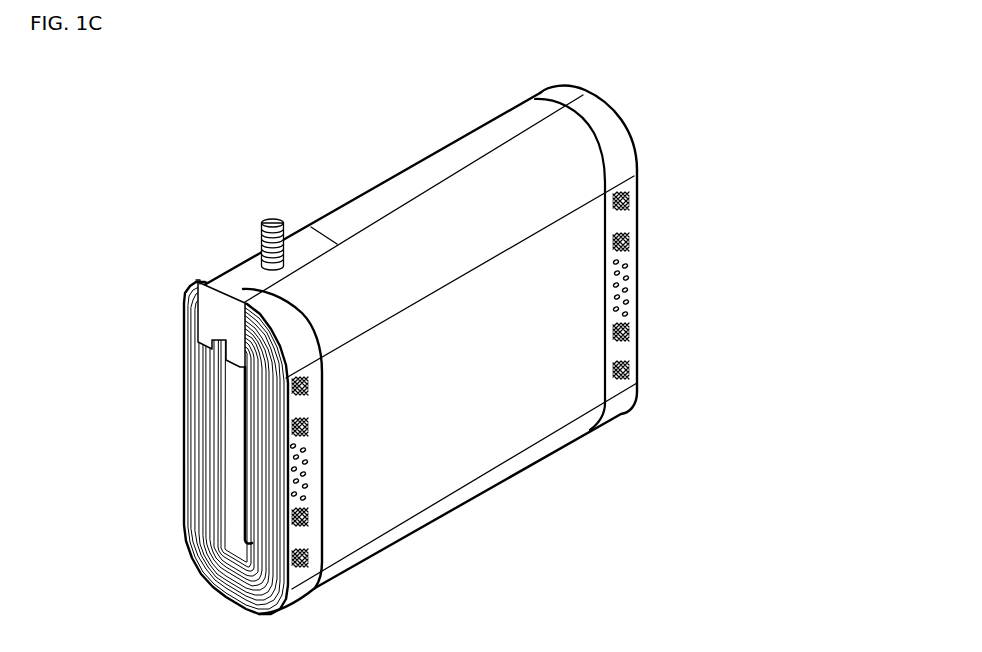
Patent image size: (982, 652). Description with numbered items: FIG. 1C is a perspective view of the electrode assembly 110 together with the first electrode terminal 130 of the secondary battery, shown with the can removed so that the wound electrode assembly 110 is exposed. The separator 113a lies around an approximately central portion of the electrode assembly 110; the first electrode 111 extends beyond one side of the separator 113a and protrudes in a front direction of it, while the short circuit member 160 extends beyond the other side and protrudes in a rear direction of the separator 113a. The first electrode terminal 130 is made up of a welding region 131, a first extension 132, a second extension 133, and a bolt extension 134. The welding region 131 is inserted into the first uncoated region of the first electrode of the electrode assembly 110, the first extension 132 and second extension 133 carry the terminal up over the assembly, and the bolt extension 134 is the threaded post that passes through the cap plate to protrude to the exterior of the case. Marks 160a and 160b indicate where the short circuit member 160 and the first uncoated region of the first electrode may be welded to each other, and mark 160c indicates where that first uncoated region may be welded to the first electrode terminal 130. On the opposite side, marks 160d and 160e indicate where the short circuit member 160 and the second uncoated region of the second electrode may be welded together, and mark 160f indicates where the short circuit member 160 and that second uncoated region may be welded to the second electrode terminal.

The electrode assembly 110 is at (306, 124).
The first electrode 111 is at (305, 590).
The separator 113a is at (468, 493).
The first electrode terminal 130 is at (332, 318).
The welding region 131 is at (243, 418).
The first extension 132 is at (213, 313).
The second extension 133 is at (240, 277).
The bolt extension 134 is at (230, 228).
The short circuit member 160 is at (409, 356).
The welding mark 160a is at (297, 397).
The welding mark 160b is at (297, 563).
The welding mark 160c is at (297, 520).
The welding mark 160d is at (631, 198).
The welding mark 160e is at (631, 372).
The welding mark 160f is at (633, 323).